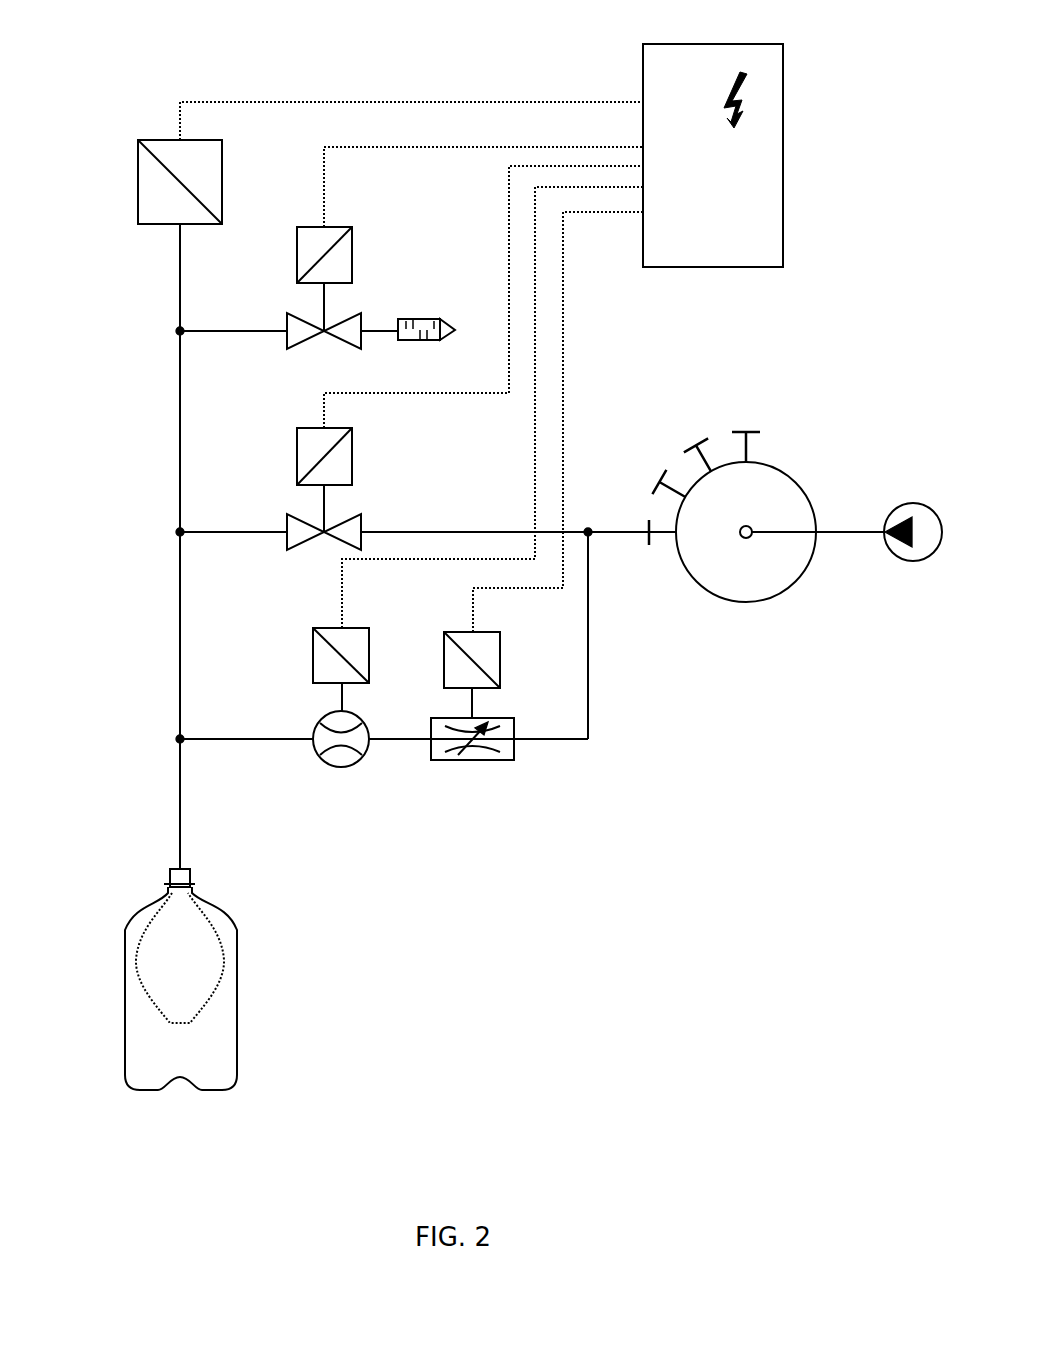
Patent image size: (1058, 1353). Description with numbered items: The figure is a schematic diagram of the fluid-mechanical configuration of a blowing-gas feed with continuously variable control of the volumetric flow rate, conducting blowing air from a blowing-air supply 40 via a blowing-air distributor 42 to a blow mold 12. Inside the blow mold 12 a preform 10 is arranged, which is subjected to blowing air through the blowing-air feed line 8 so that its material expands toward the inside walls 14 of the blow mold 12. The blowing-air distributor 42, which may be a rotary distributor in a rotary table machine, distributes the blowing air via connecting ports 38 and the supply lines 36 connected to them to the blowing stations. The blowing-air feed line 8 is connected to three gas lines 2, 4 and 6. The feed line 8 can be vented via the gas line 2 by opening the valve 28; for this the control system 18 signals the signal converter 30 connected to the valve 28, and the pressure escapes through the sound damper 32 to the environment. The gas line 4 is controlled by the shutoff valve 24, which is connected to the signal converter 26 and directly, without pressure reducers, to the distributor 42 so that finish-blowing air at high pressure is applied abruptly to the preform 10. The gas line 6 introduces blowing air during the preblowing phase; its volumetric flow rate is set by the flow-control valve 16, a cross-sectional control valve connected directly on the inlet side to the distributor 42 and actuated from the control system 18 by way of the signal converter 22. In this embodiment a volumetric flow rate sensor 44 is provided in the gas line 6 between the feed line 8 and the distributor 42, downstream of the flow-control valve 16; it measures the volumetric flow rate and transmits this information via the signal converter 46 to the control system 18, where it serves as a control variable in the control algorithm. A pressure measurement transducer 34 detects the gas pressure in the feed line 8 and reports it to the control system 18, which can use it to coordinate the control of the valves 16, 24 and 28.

The gas line 2 is at (217, 333).
The gas line 4 is at (237, 532).
The gas line 6 is at (240, 739).
The blowing-air feed line 8 is at (180, 762).
The preform 10 is at (160, 977).
The blow mold 12 is at (216, 979).
The inside walls 14 is at (237, 1013).
The flow-control valve 16 is at (488, 755).
The control system 18 is at (773, 236).
The signal converter 22 is at (494, 663).
The shutoff valve 24 is at (287, 527).
The signal converter 26 is at (297, 452).
The valve 28 is at (290, 319).
The signal converter 30 is at (297, 268).
The sound damper 32 is at (418, 318).
The pressure measurement transducer 34 is at (148, 174).
The supply lines 36 is at (605, 532).
The connecting ports 38 is at (748, 450).
The blowing-air supply 40 is at (910, 560).
The blowing-air distributor 42 is at (763, 590).
The volumetric flow rate sensor 44 is at (350, 758).
The signal converter 46 is at (313, 663).